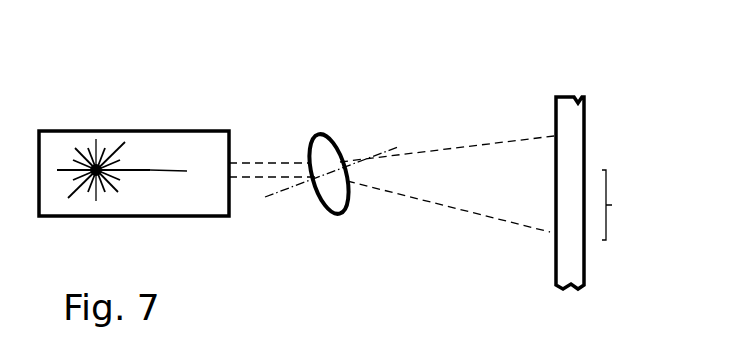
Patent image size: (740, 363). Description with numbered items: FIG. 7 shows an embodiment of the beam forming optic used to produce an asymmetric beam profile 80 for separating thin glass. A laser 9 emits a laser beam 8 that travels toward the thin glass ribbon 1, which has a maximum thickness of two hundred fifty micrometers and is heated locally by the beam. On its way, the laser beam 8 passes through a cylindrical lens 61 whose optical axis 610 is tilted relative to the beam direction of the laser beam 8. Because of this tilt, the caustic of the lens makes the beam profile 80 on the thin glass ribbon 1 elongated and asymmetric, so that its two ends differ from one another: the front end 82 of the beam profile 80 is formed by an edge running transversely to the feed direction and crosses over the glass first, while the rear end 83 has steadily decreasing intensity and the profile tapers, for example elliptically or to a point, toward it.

The laser 9 is at (135, 130).
The laser beam 8 is at (262, 167).
The cylindrical lens 61 is at (314, 133).
The optical axis 610 is at (389, 147).
The front end 82 is at (553, 138).
The rear end 83 is at (552, 233).
The thin glass ribbon 1 is at (572, 124).
The beam profile 80 is at (626, 205).